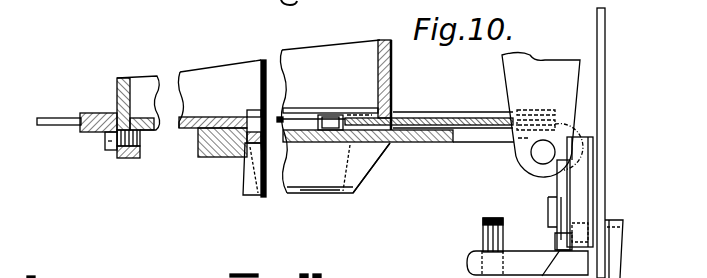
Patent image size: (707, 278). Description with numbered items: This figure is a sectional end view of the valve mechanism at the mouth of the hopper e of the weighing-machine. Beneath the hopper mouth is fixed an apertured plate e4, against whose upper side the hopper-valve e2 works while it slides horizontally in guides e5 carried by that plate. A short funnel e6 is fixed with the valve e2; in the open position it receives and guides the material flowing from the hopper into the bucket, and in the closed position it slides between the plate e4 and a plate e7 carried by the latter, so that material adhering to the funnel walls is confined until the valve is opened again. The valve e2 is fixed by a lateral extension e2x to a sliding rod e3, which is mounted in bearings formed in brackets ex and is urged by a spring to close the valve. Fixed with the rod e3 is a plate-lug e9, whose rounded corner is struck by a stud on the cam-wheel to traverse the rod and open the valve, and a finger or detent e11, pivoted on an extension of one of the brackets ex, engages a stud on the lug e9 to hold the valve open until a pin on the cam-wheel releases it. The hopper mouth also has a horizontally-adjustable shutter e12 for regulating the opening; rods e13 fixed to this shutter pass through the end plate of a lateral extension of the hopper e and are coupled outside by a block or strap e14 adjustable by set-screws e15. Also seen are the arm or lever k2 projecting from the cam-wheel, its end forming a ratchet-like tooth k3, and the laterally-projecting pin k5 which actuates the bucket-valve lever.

The hopper e is at (392, 67).
The hopper-valve e2 is at (338, 166).
The sliding rod e3 is at (532, 155).
The apertured plate e4 is at (392, 94).
The guides e5 is at (217, 157).
The short funnel e6 is at (322, 185).
The plate e7 is at (352, 194).
The plate-lug e9 is at (583, 192).
The finger or detent e11 is at (560, 215).
The horizontally-adjustable shutter e12 is at (438, 110).
The rods e13 is at (292, 88).
The block or strap e14 is at (78, 132).
The set-screws e15 is at (90, 113).
The brackets ex is at (511, 78).
The lateral extension e2x is at (433, 142).
The arm or lever k2 is at (605, 114).
The ratchet-like tooth k3 is at (597, 20).
The laterally-projecting pin k5 is at (470, 263).